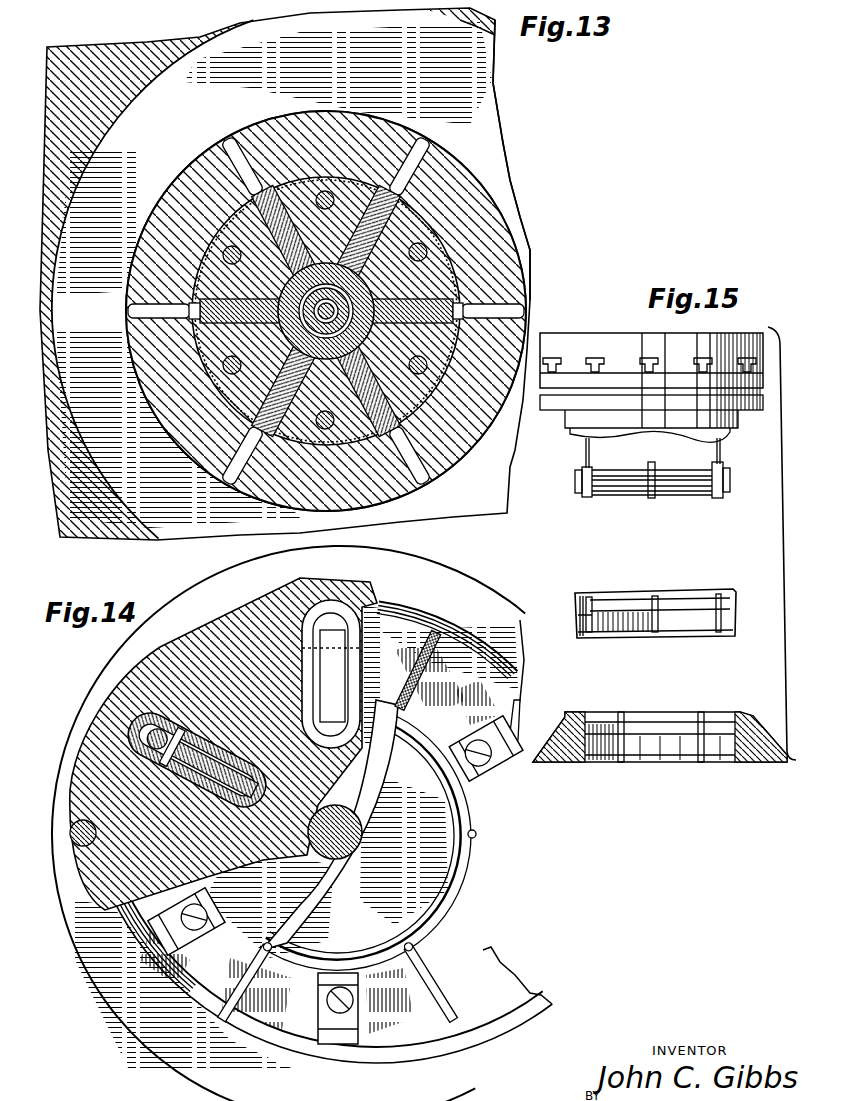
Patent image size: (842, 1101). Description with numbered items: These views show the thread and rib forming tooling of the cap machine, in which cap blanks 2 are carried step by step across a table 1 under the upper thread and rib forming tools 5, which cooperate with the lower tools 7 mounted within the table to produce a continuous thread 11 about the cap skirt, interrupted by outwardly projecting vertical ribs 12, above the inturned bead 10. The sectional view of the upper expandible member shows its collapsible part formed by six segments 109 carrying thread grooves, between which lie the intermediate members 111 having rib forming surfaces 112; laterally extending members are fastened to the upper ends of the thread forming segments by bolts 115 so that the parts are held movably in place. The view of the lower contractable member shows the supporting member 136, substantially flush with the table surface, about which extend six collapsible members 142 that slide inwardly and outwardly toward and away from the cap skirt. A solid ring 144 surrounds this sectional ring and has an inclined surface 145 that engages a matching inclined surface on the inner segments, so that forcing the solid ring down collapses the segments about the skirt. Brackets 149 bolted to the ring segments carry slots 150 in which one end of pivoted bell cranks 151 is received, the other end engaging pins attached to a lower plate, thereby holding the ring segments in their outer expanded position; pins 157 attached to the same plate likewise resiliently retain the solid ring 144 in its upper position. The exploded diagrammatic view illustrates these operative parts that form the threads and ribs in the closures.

In FIG. 13, the table 1 is at (466, 14).
In FIG. 14, the table 1 is at (95, 765).
In FIG. 13, the cap blanks 2 is at (457, 277).
In FIG. 15, the cap blanks 2 is at (738, 618).
In FIG. 15, the thread and rib forming tools 5 is at (569, 451).
In FIG. 13, the tools within the table 7 is at (515, 149).
In FIG. 14, the tools within the table 7 is at (65, 933).
In FIG. 15, the inturned bead 10 is at (733, 588).
In FIG. 15, the continuous thread 11 is at (736, 604).
In FIG. 15, the vertical ribs 12 is at (660, 620).
In FIG. 13, the segments 109 is at (400, 213).
In FIG. 13, the intermediate members 111 is at (432, 293).
In FIG. 15, the intermediate members 111 is at (717, 457).
In FIG. 13, the rib forming surfaces 112 is at (461, 310).
In FIG. 15, the rib forming surfaces 112 is at (718, 492).
In FIG. 13, the bolts 115 is at (447, 250).
In FIG. 14, the supporting member 136 is at (390, 810).
In FIG. 15, the collapsible members 142 is at (752, 756).
In FIG. 14, the collapsible members 142 is at (457, 670).
In FIG. 14, the solid ring 144 is at (518, 672).
In FIG. 14, the inclined surface 145 is at (517, 703).
In FIG. 14, the brackets 149 is at (348, 1017).
In FIG. 14, the slots 150 is at (333, 1031).
In FIG. 14, the bell cranks 151 is at (335, 657).
In FIG. 14, the pins 157 is at (76, 831).